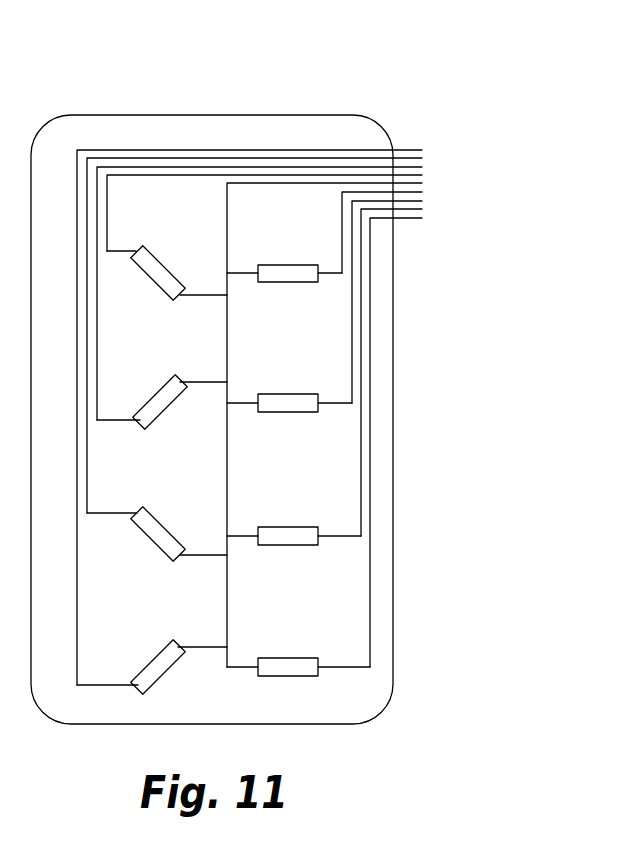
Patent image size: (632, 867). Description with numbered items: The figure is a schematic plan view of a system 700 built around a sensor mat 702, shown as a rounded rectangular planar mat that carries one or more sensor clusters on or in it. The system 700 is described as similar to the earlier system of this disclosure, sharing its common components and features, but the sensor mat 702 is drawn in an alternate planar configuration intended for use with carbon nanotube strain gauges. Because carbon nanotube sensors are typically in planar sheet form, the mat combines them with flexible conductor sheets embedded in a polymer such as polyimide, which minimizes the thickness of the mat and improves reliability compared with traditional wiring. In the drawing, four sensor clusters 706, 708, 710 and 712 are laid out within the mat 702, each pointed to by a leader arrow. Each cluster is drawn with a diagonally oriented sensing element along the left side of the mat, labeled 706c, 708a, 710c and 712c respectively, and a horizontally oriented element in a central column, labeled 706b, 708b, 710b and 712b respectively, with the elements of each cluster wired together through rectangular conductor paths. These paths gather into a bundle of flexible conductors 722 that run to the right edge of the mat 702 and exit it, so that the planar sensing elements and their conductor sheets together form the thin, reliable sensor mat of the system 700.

The system 700 is at (90, 104).
The sensor mat 702 is at (216, 126).
The conductive traces 722 is at (404, 142).
The first sensor channel 708 is at (275, 275).
The first strain gauge / sensing element 708a is at (162, 271).
The first reference resistor 708b is at (324, 287).
The second sensor channel 712 is at (269, 401).
The second strain gauge / sensing element 712c is at (150, 400).
The second reference resistor 712b is at (329, 416).
The third sensor channel 710 is at (264, 537).
The third strain gauge / sensing element 710c is at (160, 533).
The third reference resistor 710b is at (328, 542).
The fourth sensor channel 706 is at (256, 675).
The fourth strain gauge / sensing element 706c is at (150, 665).
The fourth reference resistor 706b is at (325, 677).